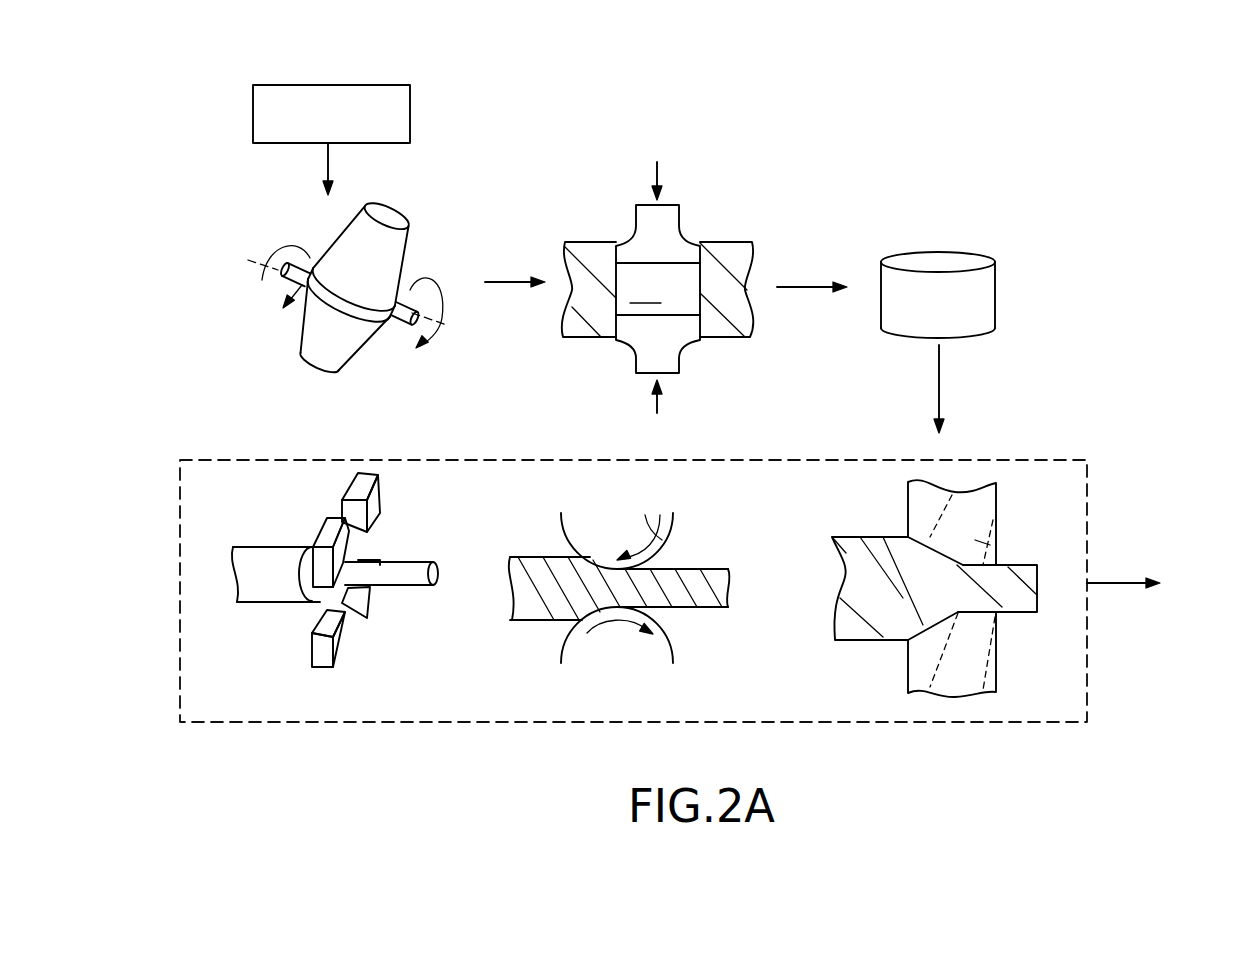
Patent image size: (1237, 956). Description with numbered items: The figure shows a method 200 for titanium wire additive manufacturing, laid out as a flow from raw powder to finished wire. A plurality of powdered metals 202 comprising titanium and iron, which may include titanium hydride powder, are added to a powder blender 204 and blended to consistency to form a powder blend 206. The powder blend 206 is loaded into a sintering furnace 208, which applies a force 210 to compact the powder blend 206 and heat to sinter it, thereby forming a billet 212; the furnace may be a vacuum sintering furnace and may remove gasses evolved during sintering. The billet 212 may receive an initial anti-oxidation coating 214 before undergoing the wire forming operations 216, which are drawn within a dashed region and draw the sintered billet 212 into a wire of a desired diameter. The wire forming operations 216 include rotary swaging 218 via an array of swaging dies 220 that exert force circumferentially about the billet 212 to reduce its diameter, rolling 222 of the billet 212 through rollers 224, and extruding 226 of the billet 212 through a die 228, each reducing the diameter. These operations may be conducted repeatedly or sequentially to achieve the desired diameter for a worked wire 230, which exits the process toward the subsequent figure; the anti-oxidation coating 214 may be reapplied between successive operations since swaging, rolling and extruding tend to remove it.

The manufacturing process 200 is at (852, 95).
The powdered metals 202 is at (410, 95).
The powder blender 204 is at (392, 212).
The powder blend 206 is at (507, 273).
The sintering furnace 208 is at (702, 215).
The force 210 is at (660, 171).
The billet 212 is at (953, 320).
The anti-oxidation coating 214 is at (941, 368).
The wire forming operations 216 is at (994, 460).
The rotary swaging 218 is at (398, 494).
The swaging dies 220 is at (343, 637).
The rolling 222 is at (703, 492).
The rollers 224 is at (668, 530).
The extruding 226 is at (1033, 505).
The die 228 is at (980, 543).
The worked wire 230 is at (1117, 585).